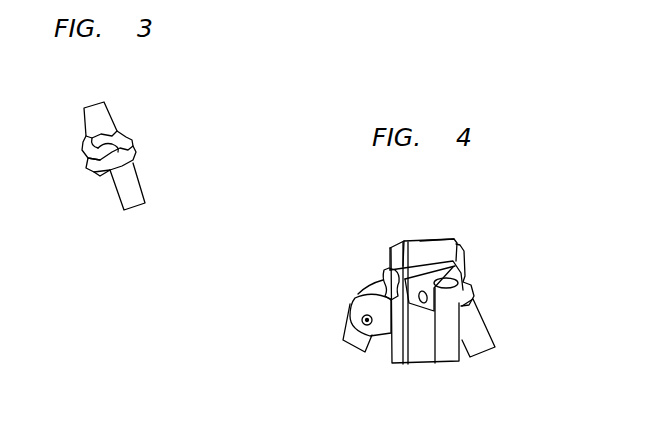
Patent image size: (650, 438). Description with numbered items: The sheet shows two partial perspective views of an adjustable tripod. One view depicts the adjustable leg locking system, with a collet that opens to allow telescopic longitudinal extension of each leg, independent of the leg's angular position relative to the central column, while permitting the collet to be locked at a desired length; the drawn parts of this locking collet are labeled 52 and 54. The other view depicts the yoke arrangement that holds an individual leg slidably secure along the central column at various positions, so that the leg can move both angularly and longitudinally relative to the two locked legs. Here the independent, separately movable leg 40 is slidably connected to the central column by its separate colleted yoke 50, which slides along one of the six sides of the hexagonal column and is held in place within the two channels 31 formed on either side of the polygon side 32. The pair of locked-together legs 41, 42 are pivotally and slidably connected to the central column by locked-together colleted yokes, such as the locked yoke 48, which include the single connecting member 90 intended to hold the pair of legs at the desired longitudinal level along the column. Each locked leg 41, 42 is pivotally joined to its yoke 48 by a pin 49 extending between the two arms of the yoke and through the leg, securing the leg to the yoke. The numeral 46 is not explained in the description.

In FIG. 3, the upper block of coupling 52 is at (118, 130).
In FIG. 3, the lower block of coupling 54 is at (136, 158).
In FIG. 4, the single connecting member 90 is at (358, 296).
In FIG. 4, the colleted yoke 50 is at (418, 266).
In FIG. 4, the channels 31 is at (408, 239).
In FIG. 4, the polygon side 32 is at (430, 242).
In FIG. 4, the bracket 46 is at (465, 261).
In FIG. 4, the locked yoke 48 is at (386, 276).
In FIG. 4, the leg 41 is at (482, 329).
In FIG. 4, the leg 42 is at (345, 338).
In FIG. 4, the pin 49 is at (372, 332).
In FIG. 4, the leg 40 is at (452, 362).